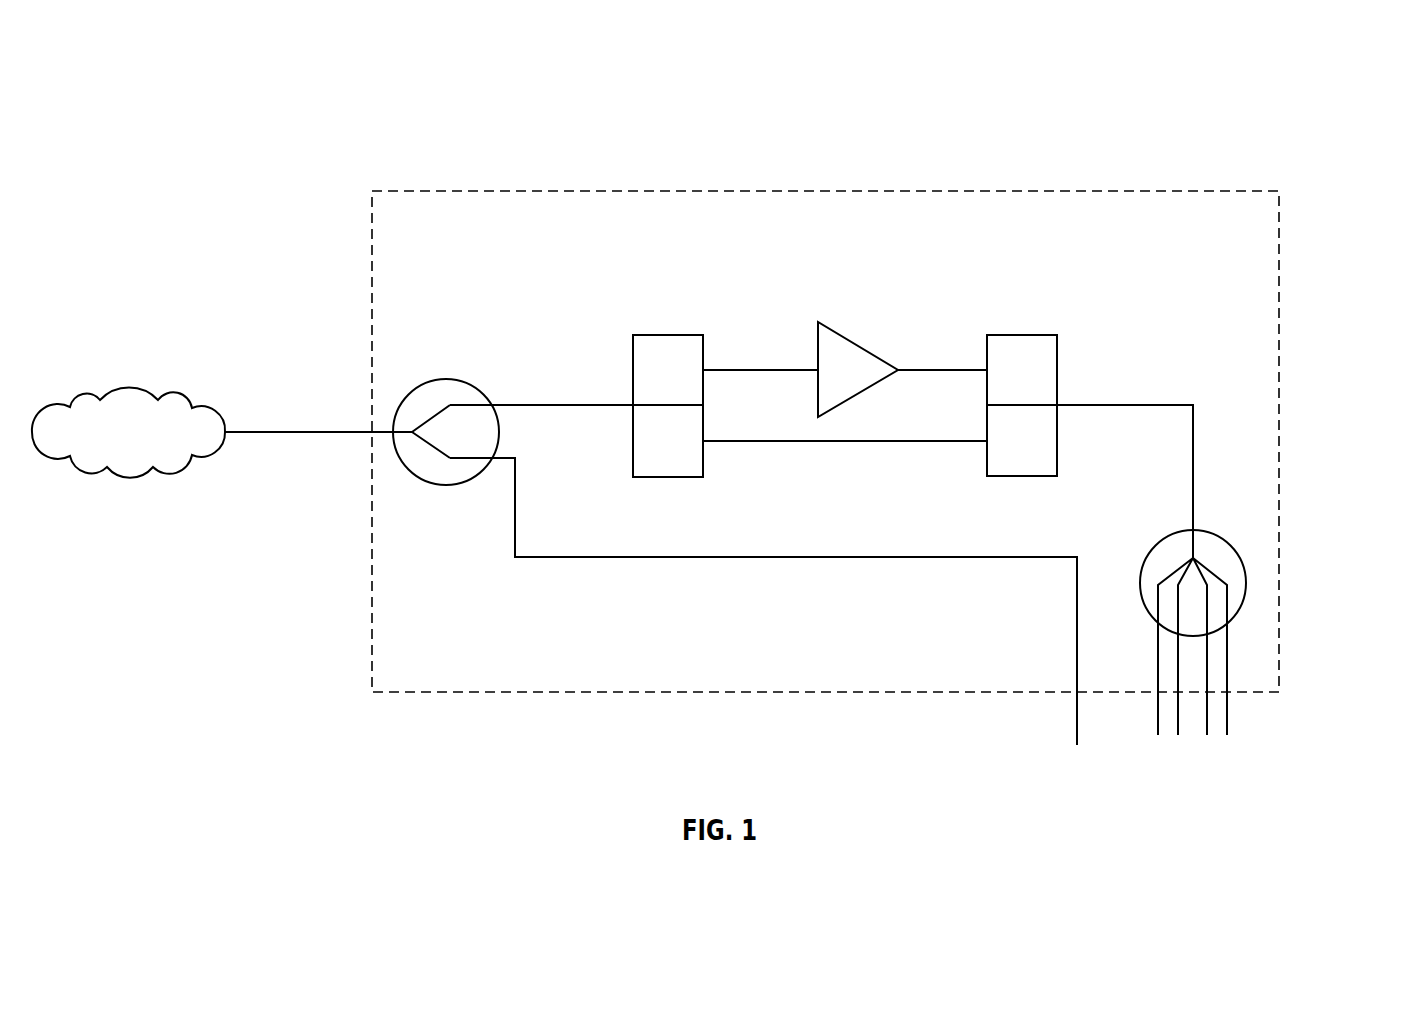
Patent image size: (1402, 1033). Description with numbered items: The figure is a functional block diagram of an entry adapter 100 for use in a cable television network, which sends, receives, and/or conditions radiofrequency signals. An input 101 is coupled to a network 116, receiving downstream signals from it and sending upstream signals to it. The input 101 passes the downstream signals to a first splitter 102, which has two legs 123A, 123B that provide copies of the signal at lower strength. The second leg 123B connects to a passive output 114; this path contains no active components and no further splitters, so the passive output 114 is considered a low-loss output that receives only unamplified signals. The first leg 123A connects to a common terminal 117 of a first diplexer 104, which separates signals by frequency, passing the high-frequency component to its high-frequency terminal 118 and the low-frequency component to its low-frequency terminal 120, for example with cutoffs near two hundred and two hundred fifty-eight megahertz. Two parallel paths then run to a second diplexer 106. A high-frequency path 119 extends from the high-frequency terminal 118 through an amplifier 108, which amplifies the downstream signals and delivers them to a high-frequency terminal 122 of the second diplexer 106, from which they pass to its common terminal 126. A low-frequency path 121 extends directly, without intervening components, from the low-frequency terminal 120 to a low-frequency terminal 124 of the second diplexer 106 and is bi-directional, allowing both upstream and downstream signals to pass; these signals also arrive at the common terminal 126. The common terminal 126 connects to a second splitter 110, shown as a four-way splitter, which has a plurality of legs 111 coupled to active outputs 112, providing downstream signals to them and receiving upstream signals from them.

The entry adapter 100 is at (1310, 84).
The network 116 is at (128, 393).
The input 101 is at (370, 433).
The first splitter 102 is at (447, 380).
The first leg 123A is at (467, 405).
The second leg 123B is at (462, 459).
The common terminal 117 is at (632, 397).
The first diplexer 104 is at (667, 477).
The high-frequency terminal 118 is at (692, 347).
The low-frequency terminal 120 is at (692, 432).
The amplifier 108 is at (862, 345).
The high-frequency path 119 is at (878, 296).
The low-frequency path 121 is at (860, 483).
The second diplexer 106 is at (1020, 335).
The high-frequency terminal 122 is at (1042, 360).
The low-frequency terminal 124 is at (1042, 445).
The common terminal 126 is at (1058, 400).
The second splitter 110 is at (1220, 538).
The legs 111 is at (1228, 657).
The active outputs 112 is at (1228, 732).
The passive output 114 is at (1077, 645).